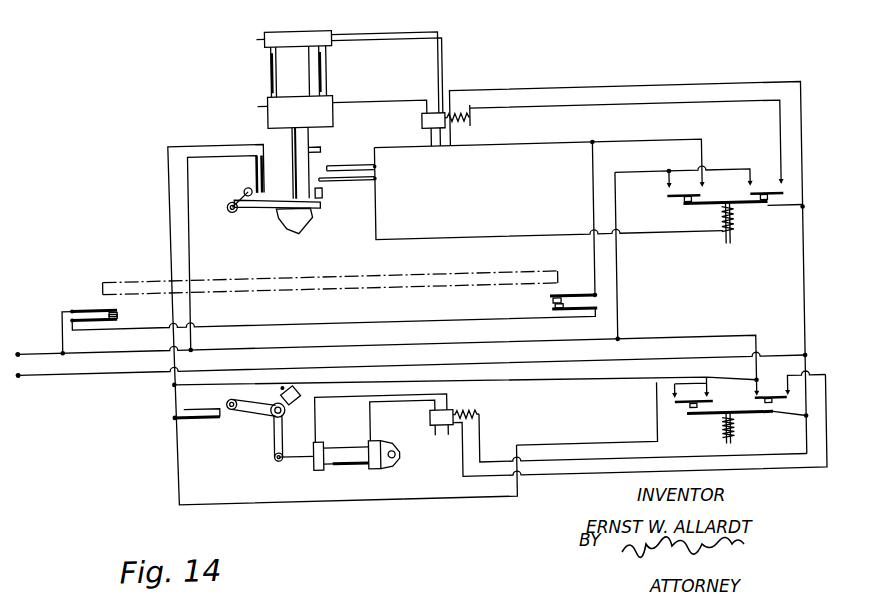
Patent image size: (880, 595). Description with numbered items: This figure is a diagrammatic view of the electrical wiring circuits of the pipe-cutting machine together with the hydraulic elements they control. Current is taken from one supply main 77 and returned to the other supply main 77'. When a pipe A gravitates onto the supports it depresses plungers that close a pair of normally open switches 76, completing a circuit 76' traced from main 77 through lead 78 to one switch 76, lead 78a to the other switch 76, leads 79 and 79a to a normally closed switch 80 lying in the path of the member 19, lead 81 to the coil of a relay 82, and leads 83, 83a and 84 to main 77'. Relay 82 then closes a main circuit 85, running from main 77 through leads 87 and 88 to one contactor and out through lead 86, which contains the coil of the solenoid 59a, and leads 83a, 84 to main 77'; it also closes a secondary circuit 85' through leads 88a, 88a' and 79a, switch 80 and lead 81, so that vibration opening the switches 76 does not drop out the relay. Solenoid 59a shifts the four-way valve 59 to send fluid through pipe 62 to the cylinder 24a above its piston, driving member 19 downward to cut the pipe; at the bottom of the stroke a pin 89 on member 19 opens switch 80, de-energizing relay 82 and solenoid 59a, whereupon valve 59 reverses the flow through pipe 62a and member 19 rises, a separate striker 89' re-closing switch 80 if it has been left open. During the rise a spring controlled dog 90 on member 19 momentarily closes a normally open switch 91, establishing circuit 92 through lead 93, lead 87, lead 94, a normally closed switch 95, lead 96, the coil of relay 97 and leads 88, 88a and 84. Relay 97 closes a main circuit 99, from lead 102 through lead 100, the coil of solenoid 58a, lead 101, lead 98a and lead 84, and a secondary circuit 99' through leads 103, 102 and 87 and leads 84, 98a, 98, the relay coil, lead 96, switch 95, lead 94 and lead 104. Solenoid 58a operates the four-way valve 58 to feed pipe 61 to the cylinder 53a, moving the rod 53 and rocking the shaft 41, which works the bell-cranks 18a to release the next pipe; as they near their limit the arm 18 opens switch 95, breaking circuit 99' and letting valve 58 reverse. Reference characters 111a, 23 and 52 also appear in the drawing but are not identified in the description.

The ports of cylinder 111a is at (266, 35).
The cylinder 24a is at (311, 73).
The pipe 62 is at (446, 66).
The pipe 62a is at (399, 101).
The four-way valve 59 is at (424, 127).
The solenoid 59a is at (472, 125).
The main circuit 85 is at (626, 136).
The lead 86 is at (652, 95).
The lead 83 is at (788, 219).
The lead 83a is at (805, 281).
The lead 79a is at (480, 148).
The secondary circuit 85' is at (648, 164).
The lead 81 is at (377, 248).
The normally closed switch 80 is at (345, 164).
The lead 79 is at (594, 221).
The normally open electric switch 76 is at (329, 284).
The electric circuit 76' is at (491, 308).
The lead 78 is at (60, 303).
The lead 78a is at (238, 321).
The pipe A is at (331, 297).
The current supply main 77 is at (158, 335).
The lead 87 is at (451, 350).
The supply main 77' is at (411, 376).
The lead 102 is at (753, 350).
The lead 84 is at (784, 363).
The lead 104 is at (540, 385).
The lead 103 is at (672, 410).
The lead 98 is at (774, 428).
The relay 97 is at (720, 438).
The lead 98a is at (818, 395).
The lead 100 is at (826, 477).
The main circuit 99 is at (531, 460).
The lead 101 is at (480, 440).
The four-way valve 58 is at (428, 418).
The solenoid 58a is at (472, 416).
The pipe 61 is at (318, 420).
The rod 53 is at (296, 460).
The cylinder 53a is at (350, 470).
The shaft 41 is at (282, 420).
The link 52 is at (272, 443).
The arm 18 is at (229, 398).
The bell-crank 18a is at (283, 390).
The normally closed switch 95 is at (200, 416).
The lead 94 is at (170, 155).
The lead 96 is at (272, 500).
The circuit 92 is at (352, 500).
The secondary circuit 99' is at (586, 412).
The lead 93 is at (192, 238).
The normally open switch 91 is at (265, 178).
The spring controlled dog 90 is at (242, 190).
The member 19 is at (294, 226).
The piston rod 23 is at (296, 147).
The pin 89 is at (334, 134).
The striker 89' is at (335, 198).
The lead 88 is at (619, 218).
The lead 88a is at (658, 186).
The lead 88a' is at (710, 165).
The relay 82 is at (737, 239).